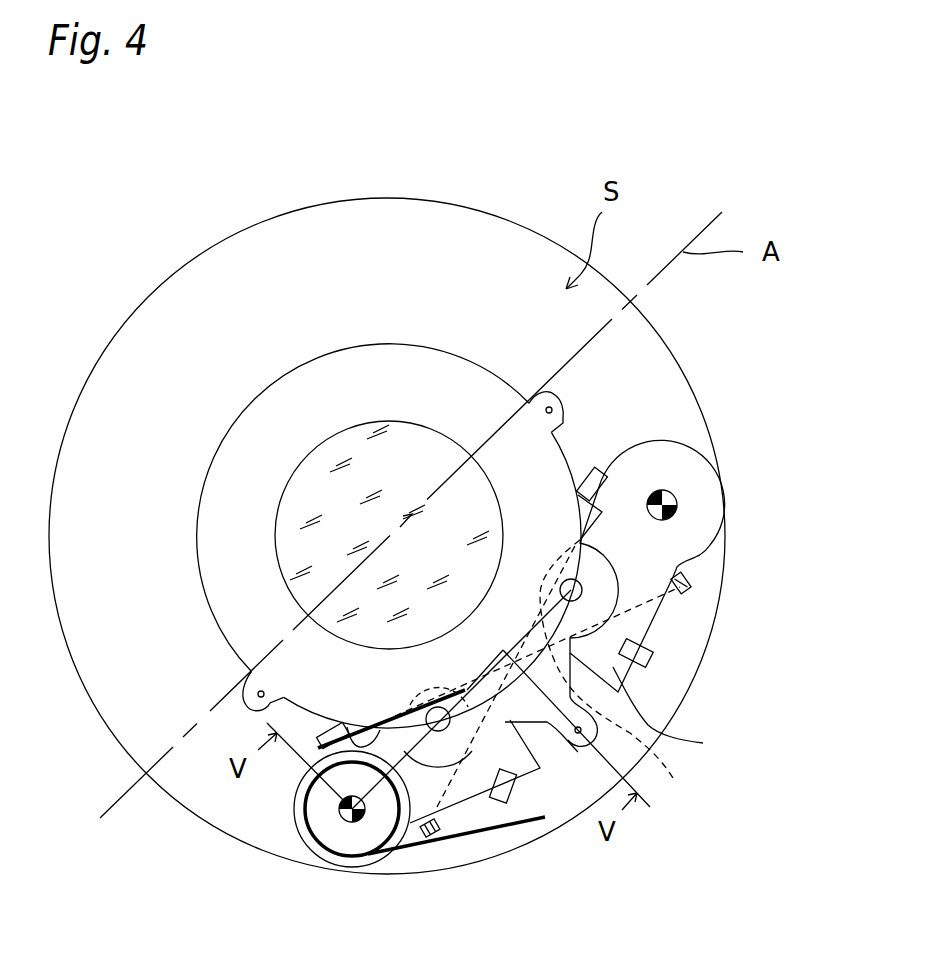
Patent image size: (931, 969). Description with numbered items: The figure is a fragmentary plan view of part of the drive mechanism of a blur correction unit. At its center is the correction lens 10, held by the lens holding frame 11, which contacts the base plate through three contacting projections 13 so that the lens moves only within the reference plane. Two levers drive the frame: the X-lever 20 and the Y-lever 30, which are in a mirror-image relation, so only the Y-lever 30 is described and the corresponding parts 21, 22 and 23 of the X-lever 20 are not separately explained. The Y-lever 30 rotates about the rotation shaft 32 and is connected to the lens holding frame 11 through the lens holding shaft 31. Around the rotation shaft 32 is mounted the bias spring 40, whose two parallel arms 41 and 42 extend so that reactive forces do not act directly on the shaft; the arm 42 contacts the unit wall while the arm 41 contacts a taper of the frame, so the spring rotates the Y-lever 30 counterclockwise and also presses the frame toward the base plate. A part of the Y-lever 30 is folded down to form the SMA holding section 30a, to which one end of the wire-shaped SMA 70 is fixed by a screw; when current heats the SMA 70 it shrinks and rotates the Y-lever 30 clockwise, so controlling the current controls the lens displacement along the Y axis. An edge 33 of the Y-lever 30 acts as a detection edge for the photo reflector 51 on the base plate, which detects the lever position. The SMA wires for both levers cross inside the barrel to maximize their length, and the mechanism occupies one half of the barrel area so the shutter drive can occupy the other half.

The correction lens 10 is at (398, 422).
The lens holding frame 11 is at (453, 370).
The contacting projections 13 is at (258, 694).
The X-lever 20 is at (697, 530).
The pivot hole 21 is at (576, 596).
The center of gravity mark 22 is at (677, 500).
The arm 23 is at (674, 705).
The Y-lever 30 is at (356, 853).
The SMA holding section 30a is at (327, 725).
The lens holding shaft 31 is at (398, 708).
The rotation shaft 32 is at (350, 820).
The detection edge 33 is at (545, 800).
The bias spring 40 is at (405, 850).
The arm 41 is at (450, 707).
The arm 42 is at (495, 842).
The photo reflector 51 is at (641, 661).
The SMA 70 is at (566, 676).